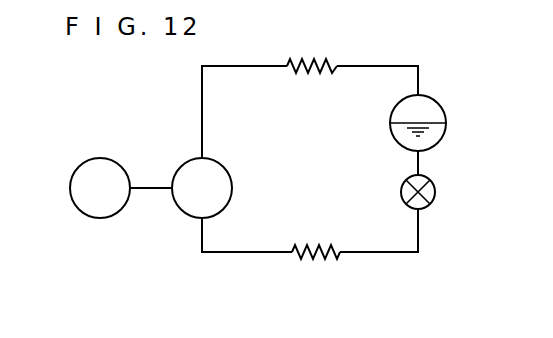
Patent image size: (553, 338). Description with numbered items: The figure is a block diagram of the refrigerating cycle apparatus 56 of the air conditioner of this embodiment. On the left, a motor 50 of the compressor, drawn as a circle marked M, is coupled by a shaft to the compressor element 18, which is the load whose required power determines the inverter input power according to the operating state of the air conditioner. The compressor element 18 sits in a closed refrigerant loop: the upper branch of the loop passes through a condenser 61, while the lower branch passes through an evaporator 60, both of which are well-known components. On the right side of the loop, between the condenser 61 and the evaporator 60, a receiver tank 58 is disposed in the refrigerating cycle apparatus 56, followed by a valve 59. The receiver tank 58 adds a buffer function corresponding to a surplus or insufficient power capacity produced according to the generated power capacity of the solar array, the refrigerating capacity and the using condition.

The motor 50 is at (105, 158).
The pump 18 is at (183, 207).
The condenser 61 is at (332, 63).
The evaporator 60 is at (342, 255).
The receiver tank 58 is at (443, 115).
The valve 59 is at (437, 197).
The refrigerating cycle apparatus 56 is at (453, 72).